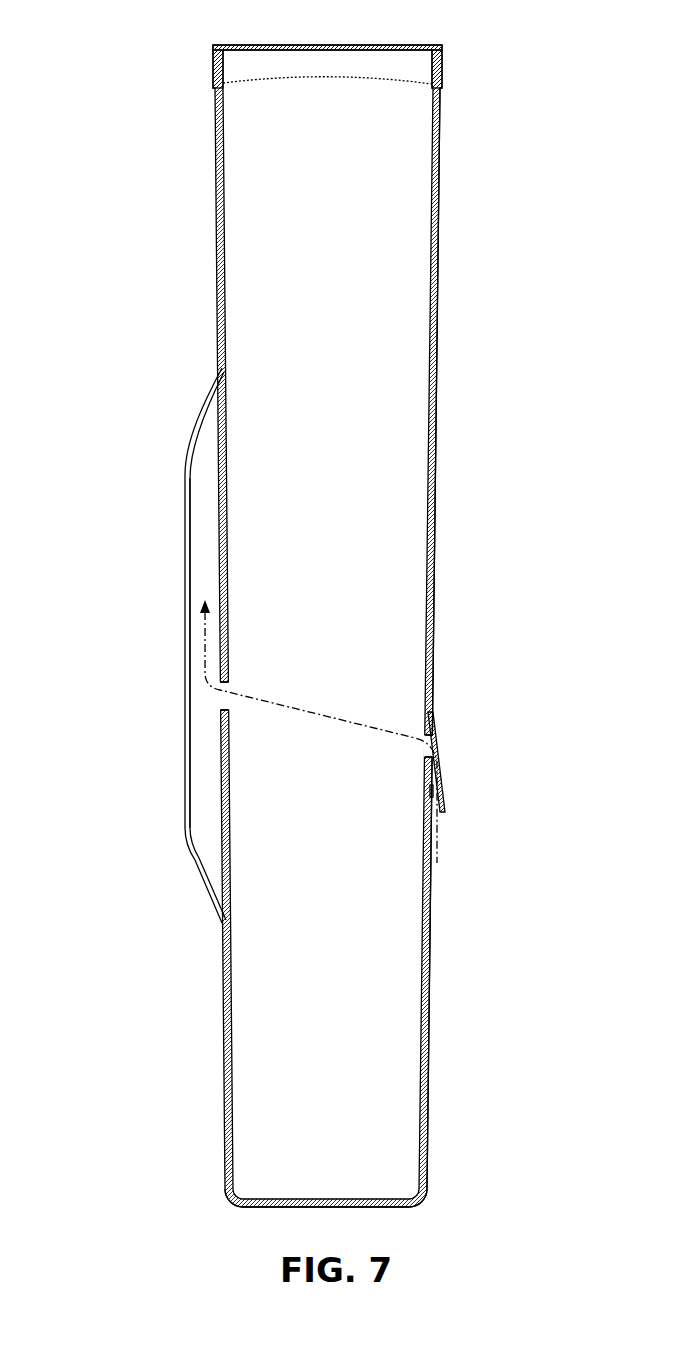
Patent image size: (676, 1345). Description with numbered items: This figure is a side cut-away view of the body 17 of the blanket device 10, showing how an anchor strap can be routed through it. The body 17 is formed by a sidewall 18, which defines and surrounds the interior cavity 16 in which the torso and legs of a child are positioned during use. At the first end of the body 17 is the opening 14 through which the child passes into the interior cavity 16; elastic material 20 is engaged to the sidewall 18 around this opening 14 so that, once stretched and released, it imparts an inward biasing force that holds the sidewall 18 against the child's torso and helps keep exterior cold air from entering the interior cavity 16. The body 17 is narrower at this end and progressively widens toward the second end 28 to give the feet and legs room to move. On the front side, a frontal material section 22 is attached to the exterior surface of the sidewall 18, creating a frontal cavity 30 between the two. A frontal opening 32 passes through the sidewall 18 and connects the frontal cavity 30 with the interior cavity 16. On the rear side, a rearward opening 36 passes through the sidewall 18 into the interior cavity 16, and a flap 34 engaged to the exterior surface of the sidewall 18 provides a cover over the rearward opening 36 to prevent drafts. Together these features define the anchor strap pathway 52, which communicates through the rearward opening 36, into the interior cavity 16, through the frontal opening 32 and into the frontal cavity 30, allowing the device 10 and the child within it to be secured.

The blanket device 10 is at (313, 628).
The opening 14 is at (270, 60).
The interior cavity 16 is at (337, 357).
The body 17 is at (435, 175).
The sidewall 18 is at (222, 288).
The elastic material 20 is at (213, 75).
The frontal material section 22 is at (185, 488).
The second end 28 is at (295, 1210).
The frontal cavity 30 is at (202, 537).
The frontal opening 32 is at (228, 686).
The flap 34 is at (443, 777).
The rearward opening 36 is at (422, 748).
The anchor strap pathway 52 is at (303, 712).